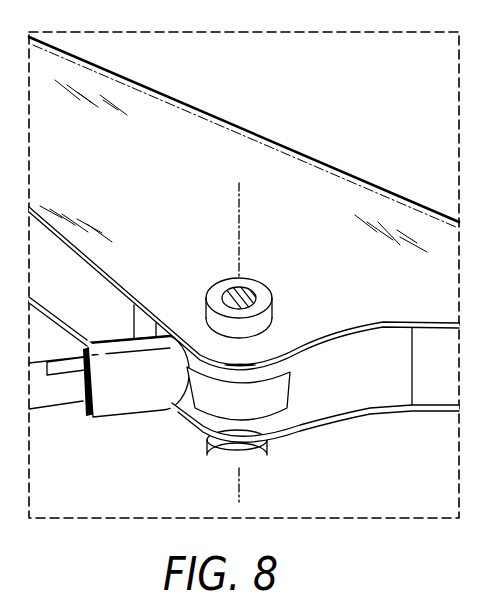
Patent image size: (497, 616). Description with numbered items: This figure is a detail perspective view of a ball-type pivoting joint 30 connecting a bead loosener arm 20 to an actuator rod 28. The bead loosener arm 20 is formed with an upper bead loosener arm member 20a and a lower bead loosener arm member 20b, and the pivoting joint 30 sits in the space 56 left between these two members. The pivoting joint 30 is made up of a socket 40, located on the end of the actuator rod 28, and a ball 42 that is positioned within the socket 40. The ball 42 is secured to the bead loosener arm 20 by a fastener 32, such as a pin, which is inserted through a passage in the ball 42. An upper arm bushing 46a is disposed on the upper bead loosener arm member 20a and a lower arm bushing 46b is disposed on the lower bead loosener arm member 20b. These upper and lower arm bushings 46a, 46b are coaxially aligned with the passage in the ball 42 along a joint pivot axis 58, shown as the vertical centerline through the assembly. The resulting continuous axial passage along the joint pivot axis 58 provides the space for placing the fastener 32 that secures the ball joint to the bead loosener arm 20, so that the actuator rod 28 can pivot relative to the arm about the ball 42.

The bead loosener arm 20 is at (243, 153).
The upper bead loosener arm member 20a is at (387, 322).
The lower bead loosener arm member 20b is at (370, 411).
The actuator rod 28 is at (42, 405).
The pivoting joint 30 is at (165, 454).
The fastener 32 is at (247, 290).
The socket 40 is at (223, 408).
The ball 42 is at (267, 363).
The upper arm bushing 46a is at (268, 315).
The lower arm bushing 46b is at (270, 453).
The space 56 is at (388, 386).
The joint pivot axis 58 is at (238, 238).